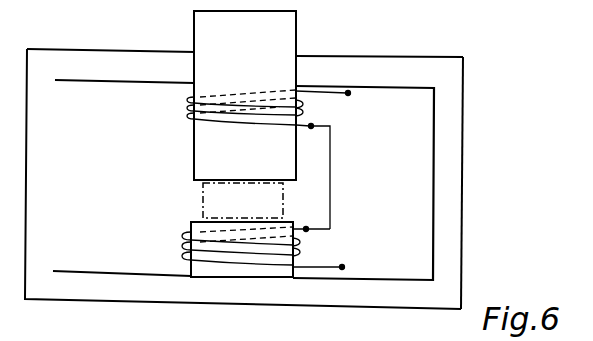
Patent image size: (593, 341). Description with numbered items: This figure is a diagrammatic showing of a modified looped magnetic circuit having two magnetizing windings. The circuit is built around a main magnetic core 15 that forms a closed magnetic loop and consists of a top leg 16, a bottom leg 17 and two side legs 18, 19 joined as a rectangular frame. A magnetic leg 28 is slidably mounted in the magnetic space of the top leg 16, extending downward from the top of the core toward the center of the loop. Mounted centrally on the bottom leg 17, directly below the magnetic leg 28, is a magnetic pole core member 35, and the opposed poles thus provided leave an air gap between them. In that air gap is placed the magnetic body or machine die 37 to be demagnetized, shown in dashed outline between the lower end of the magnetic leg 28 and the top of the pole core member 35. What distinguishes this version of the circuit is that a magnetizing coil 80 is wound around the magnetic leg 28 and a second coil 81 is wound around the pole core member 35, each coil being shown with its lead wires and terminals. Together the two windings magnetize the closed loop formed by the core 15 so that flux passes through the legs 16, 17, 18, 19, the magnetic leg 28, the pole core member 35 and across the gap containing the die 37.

The main magnetic core 15 is at (492, 173).
The top leg 16 is at (360, 63).
The bottom leg 17 is at (322, 305).
The side leg 18 is at (52, 198).
The side leg 19 is at (461, 249).
The magnetic leg 28 is at (299, 39).
The magnetic pole core member 35 is at (296, 263).
The magnetic body or machine die 37 is at (203, 200).
The magnetizing coil 80 is at (303, 103).
The coil 81 is at (184, 232).